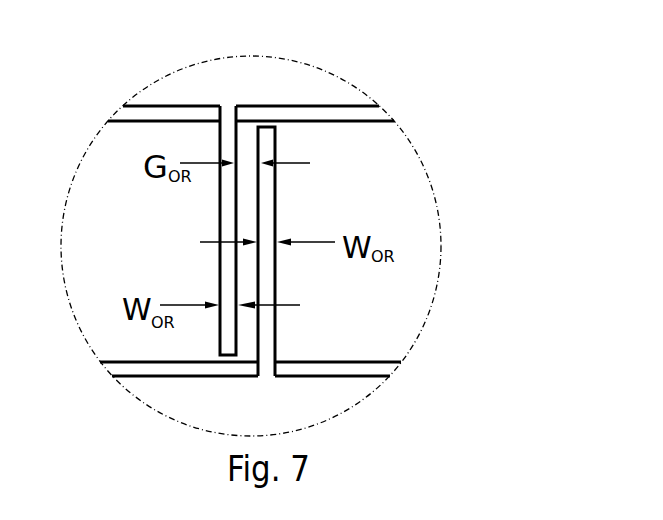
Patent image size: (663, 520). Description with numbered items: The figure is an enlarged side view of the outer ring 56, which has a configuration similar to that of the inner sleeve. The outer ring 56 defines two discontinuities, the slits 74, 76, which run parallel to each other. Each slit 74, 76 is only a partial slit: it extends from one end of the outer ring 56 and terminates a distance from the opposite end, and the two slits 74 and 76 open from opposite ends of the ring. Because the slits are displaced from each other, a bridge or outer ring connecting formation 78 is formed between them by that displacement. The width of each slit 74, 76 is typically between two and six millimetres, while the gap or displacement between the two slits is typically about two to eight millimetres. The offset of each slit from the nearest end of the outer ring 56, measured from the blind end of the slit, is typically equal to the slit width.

The outer ring 56 is at (388, 323).
The slit 74 is at (267, 365).
The slit 76 is at (228, 106).
The outer ring connecting formation 78 is at (248, 197).